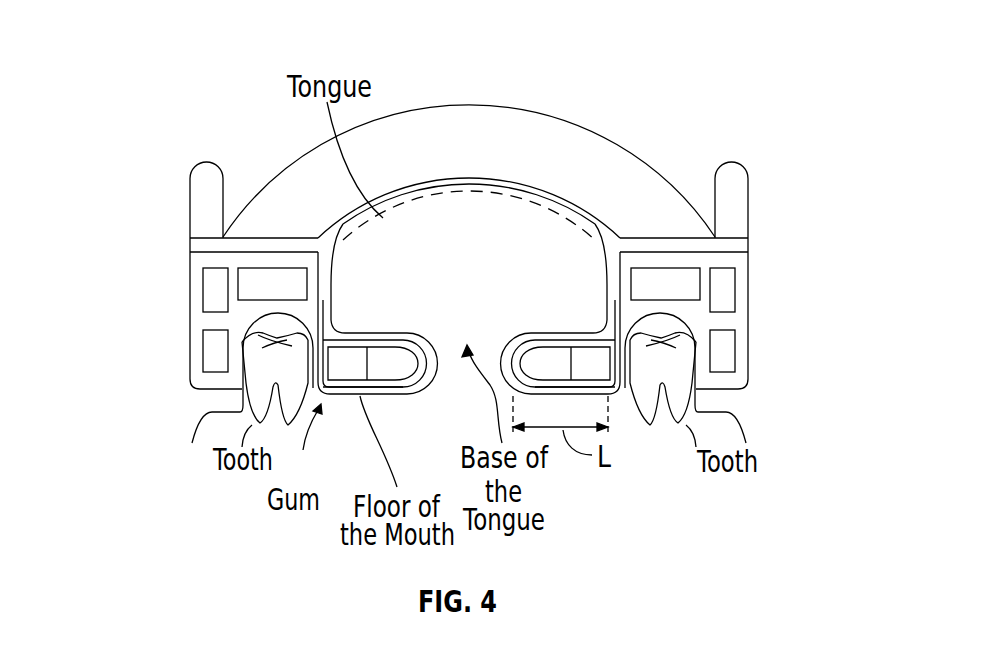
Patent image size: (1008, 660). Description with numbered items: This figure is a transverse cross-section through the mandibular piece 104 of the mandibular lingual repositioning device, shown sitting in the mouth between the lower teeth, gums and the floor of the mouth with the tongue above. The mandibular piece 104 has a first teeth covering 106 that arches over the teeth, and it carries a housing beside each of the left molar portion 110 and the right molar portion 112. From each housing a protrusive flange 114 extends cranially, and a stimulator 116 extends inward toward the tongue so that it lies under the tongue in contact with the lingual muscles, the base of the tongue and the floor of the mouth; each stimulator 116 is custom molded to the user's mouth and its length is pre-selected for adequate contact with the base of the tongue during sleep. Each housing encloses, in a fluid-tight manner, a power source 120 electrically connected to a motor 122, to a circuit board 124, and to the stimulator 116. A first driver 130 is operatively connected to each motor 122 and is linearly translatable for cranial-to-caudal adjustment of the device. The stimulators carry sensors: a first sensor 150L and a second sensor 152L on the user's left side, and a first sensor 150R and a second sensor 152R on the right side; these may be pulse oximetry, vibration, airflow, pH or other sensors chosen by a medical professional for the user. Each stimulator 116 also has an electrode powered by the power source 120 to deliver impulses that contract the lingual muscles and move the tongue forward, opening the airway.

The mandibular piece 104 is at (634, 82).
The first teeth covering 106 is at (470, 105).
The left molar portion 110 is at (343, 218).
The right molar portion 112 is at (610, 228).
The protrusive flange 114 is at (190, 195).
The stimulator 116 is at (548, 338).
The power source 120 is at (202, 352).
The motor 122 is at (202, 290).
The circuit board 124 is at (250, 268).
The first driver 130 is at (293, 237).
The first sensor (left side) 150L is at (400, 360).
The first sensor (right side) 150R is at (548, 363).
The second sensor (left side) 152L is at (333, 386).
The second sensor (right side) 152R is at (612, 387).